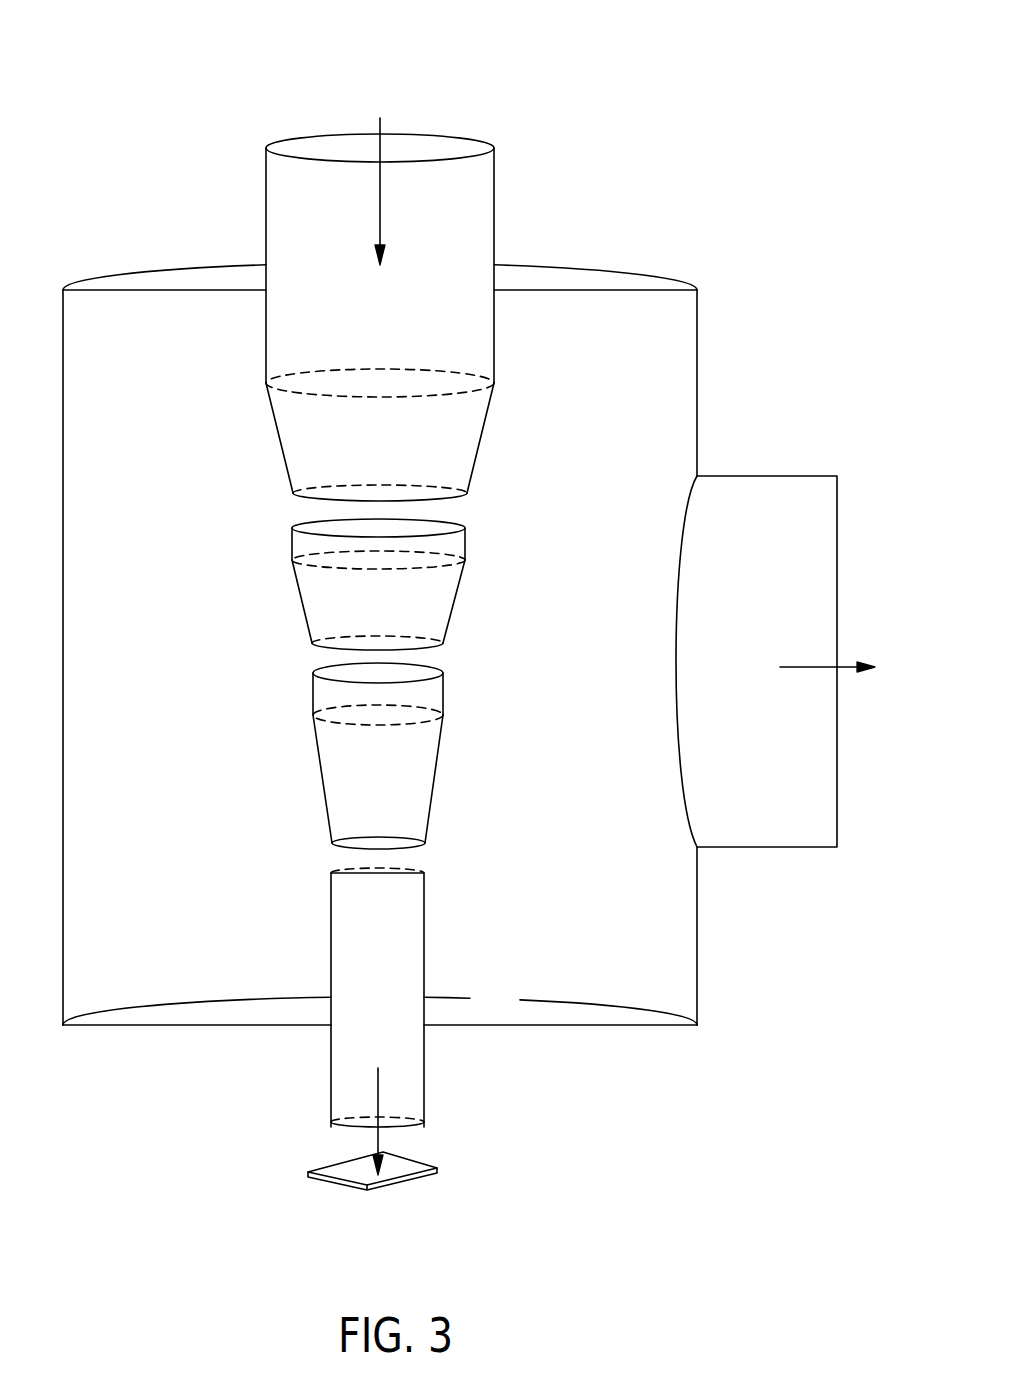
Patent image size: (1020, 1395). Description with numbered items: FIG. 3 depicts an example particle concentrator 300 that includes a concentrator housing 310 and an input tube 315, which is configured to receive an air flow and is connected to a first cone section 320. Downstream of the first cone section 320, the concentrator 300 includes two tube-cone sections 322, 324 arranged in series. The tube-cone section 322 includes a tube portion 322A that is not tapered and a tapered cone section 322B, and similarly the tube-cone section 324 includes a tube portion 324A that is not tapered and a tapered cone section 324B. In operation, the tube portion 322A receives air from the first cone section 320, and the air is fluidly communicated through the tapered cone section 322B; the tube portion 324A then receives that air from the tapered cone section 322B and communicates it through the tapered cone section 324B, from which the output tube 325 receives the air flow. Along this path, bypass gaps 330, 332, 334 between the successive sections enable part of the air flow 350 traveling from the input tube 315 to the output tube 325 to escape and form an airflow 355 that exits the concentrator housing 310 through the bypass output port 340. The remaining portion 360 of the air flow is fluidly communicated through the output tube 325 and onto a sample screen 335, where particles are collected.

The particle concentrator 300 is at (383, 60).
The concentrator housing 310 is at (697, 387).
The input tube 315 is at (520, 390).
The first cone section 320 is at (524, 392).
The tube-cone section 322 is at (378, 584).
The tube portion 322A is at (292, 545).
The tapered cone section 322B is at (310, 622).
The tube-cone section 324 is at (374, 756).
The tube portion 324A is at (313, 698).
The tapered cone section 324B is at (330, 793).
The output tube 325 is at (433, 875).
The bypass gap 330 is at (497, 504).
The bypass gap 332 is at (467, 649).
The bypass gap 334 is at (437, 847).
The sample screen 335 is at (390, 1180).
The bypass output port 340 is at (822, 775).
The air flow 350 is at (405, 140).
The airflow 355 is at (797, 663).
The portion of the air flow 360 is at (380, 1137).